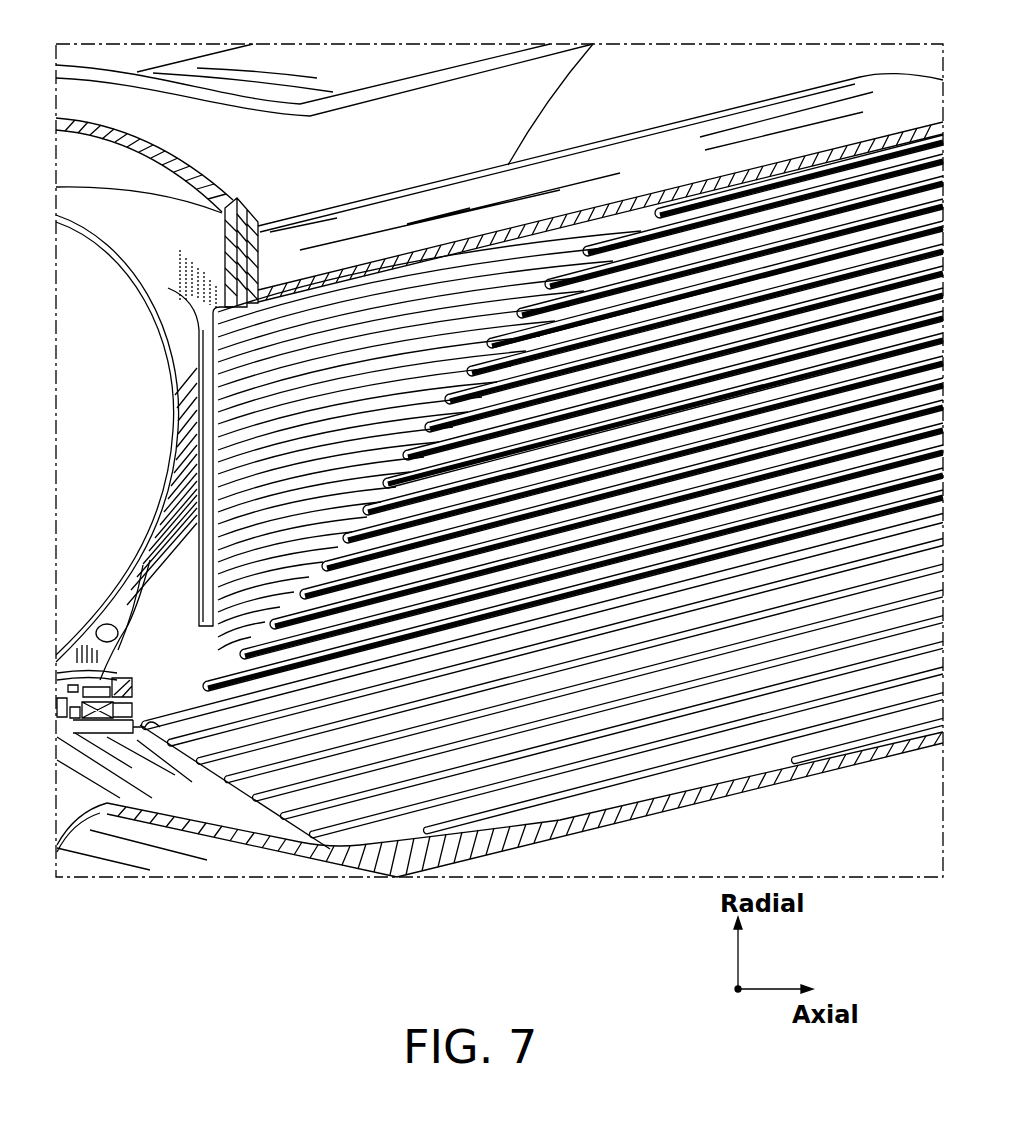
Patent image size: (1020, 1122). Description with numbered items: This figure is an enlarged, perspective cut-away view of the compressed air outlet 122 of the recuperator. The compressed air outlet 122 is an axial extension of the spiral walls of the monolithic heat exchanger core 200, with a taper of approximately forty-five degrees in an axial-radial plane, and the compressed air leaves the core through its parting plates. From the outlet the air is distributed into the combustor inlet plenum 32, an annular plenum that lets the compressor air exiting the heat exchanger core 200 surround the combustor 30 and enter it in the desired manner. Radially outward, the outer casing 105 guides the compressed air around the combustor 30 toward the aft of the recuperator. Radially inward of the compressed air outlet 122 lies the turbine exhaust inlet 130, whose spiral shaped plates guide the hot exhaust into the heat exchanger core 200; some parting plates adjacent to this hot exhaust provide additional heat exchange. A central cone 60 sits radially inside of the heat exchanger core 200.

The outer casing 105 is at (316, 80).
The combustor 30 is at (102, 459).
The combustor inlet plenum 32 is at (238, 398).
The compressed air outlet 122 is at (402, 398).
The heat exchanger core 200 is at (679, 538).
The turbine exhaust inlet 130 is at (197, 804).
The central cone 60 is at (826, 844).